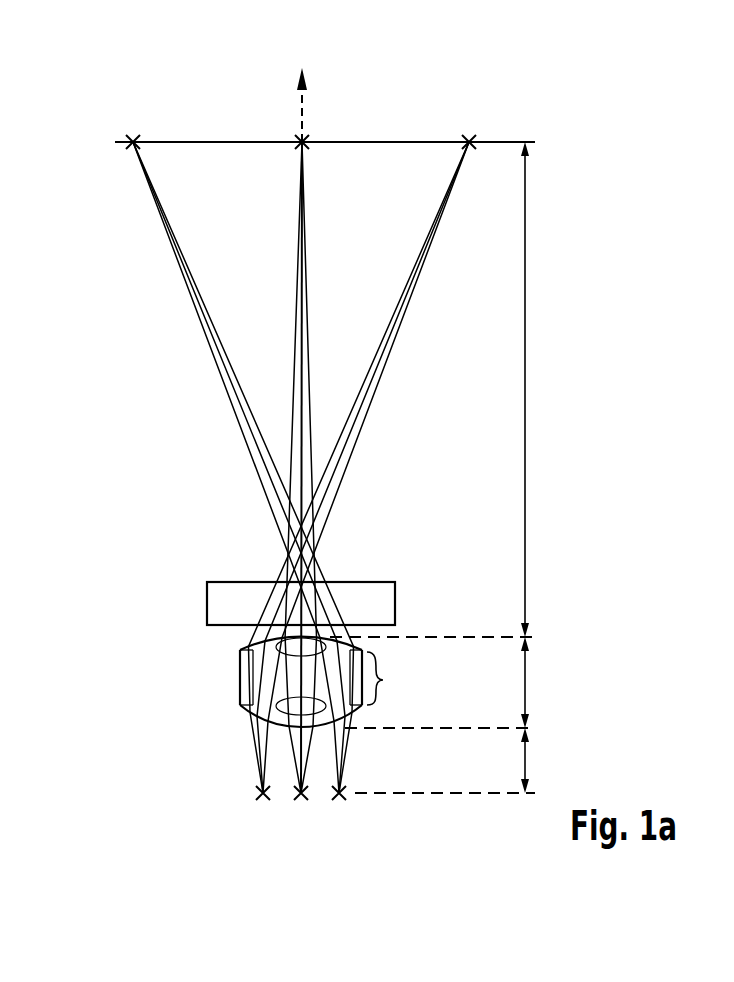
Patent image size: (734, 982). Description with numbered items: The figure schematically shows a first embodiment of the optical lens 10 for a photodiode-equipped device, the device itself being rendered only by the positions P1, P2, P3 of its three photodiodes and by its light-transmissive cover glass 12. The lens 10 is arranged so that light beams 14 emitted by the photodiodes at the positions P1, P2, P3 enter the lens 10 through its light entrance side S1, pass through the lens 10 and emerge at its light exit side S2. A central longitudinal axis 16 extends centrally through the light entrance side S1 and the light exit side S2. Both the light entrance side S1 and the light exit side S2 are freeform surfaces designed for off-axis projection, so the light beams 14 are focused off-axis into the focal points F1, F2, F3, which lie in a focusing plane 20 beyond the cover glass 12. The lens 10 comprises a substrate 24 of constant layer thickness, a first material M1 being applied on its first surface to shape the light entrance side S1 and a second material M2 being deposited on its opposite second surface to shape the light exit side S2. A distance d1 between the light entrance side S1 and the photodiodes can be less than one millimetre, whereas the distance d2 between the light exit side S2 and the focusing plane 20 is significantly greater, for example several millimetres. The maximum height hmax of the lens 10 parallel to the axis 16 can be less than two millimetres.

The optical lens 10 is at (350, 681).
The light-transmissive cover glass 12 is at (395, 603).
The light beams 14 is at (372, 362).
The central longitudinal axis 16 is at (307, 105).
The focusing plane 20 is at (420, 140).
The substrate 24 is at (389, 678).
The light entrance side S1 is at (244, 705).
The light exit side S2 is at (244, 649).
The first material M1 is at (363, 705).
The second material M2 is at (363, 647).
The focal point F1 is at (473, 133).
The focal point F2 is at (308, 133).
The focal point F3 is at (126, 135).
The photodiode position P1 is at (267, 797).
The photodiode position P2 is at (305, 797).
The photodiode position P3 is at (343, 797).
The distance between light entrance side and photodiodes d1 is at (525, 763).
The distance between light exit side and focusing plane d2 is at (525, 363).
The maximum height of the optical lens hmax is at (525, 682).